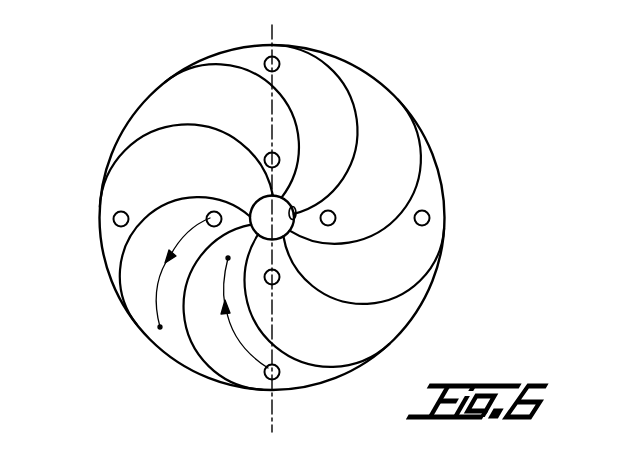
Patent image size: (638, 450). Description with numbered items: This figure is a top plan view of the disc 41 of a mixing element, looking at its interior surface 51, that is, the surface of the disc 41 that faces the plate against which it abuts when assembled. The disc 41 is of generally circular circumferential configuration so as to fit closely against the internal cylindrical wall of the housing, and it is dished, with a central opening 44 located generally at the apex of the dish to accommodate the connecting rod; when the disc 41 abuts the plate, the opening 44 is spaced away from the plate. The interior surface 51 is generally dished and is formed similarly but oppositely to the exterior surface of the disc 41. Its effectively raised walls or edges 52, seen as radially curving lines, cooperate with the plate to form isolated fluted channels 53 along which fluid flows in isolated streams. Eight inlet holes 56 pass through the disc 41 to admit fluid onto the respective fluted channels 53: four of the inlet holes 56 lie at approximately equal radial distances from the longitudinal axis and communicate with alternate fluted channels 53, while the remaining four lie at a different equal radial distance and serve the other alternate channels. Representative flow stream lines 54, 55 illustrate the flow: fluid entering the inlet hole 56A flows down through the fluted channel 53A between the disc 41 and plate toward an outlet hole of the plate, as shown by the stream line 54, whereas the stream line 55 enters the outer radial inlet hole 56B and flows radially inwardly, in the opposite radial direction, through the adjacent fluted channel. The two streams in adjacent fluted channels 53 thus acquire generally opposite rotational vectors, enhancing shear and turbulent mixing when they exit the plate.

The disc 41 is at (433, 151).
The central opening 44 is at (294, 207).
The interior surface 51 is at (392, 124).
The raised walls or edges 52 is at (352, 103).
The fluted channels 53 is at (170, 102).
The fluted channel 53A is at (142, 313).
The flow stream line 54 is at (158, 278).
The flow stream line 55 is at (234, 345).
The inlet holes 56 is at (430, 217).
The inlet hole 56A is at (214, 211).
The outer radial inlet hole 56B is at (281, 377).